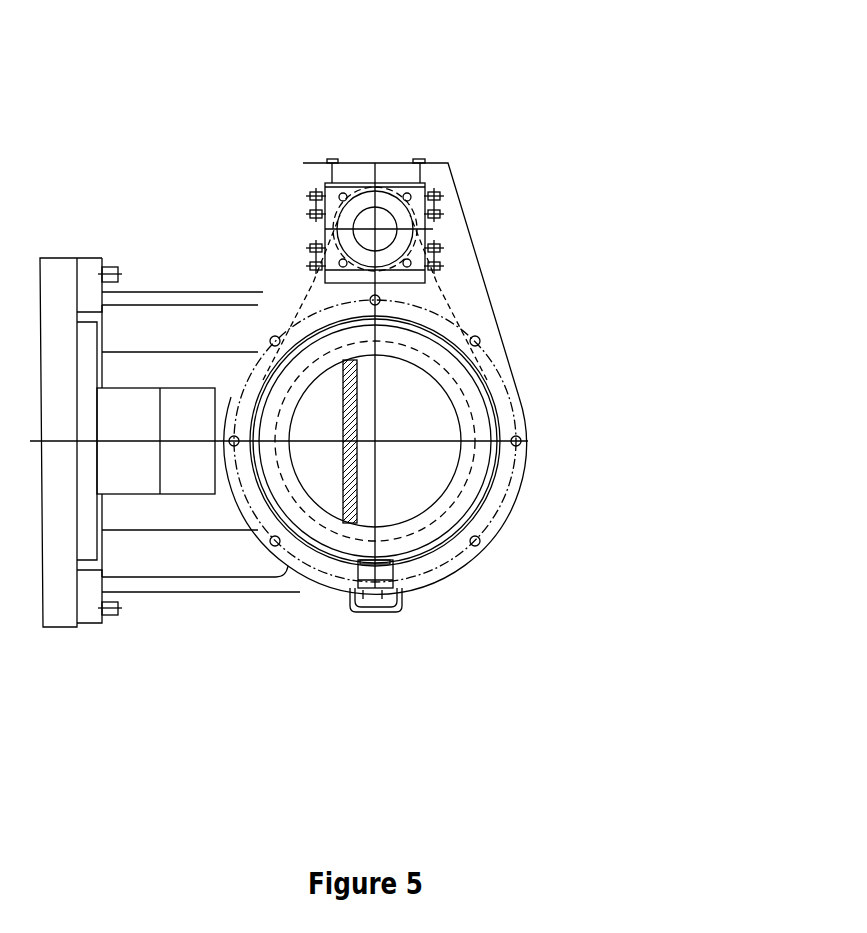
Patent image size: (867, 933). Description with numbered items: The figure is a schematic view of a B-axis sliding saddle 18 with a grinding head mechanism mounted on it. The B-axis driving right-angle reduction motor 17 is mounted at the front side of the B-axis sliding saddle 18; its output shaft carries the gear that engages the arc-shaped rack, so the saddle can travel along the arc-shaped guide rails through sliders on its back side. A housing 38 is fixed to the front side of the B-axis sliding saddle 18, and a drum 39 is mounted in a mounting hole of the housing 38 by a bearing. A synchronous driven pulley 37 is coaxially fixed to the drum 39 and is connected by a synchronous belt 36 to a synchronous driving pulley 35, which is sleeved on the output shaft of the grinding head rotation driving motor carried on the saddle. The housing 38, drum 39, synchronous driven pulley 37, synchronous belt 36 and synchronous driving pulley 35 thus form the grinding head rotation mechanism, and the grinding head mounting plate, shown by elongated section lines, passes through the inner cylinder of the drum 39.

The B-axis driving right-angle reduction motor 17 is at (137, 477).
The B-axis sliding saddle 18 is at (53, 330).
The synchronous driving pulley 35 is at (417, 203).
The synchronous belt 36 is at (442, 292).
The synchronous driven pulley 37 is at (490, 395).
The housing 38 is at (505, 488).
The drum 39 is at (437, 513).